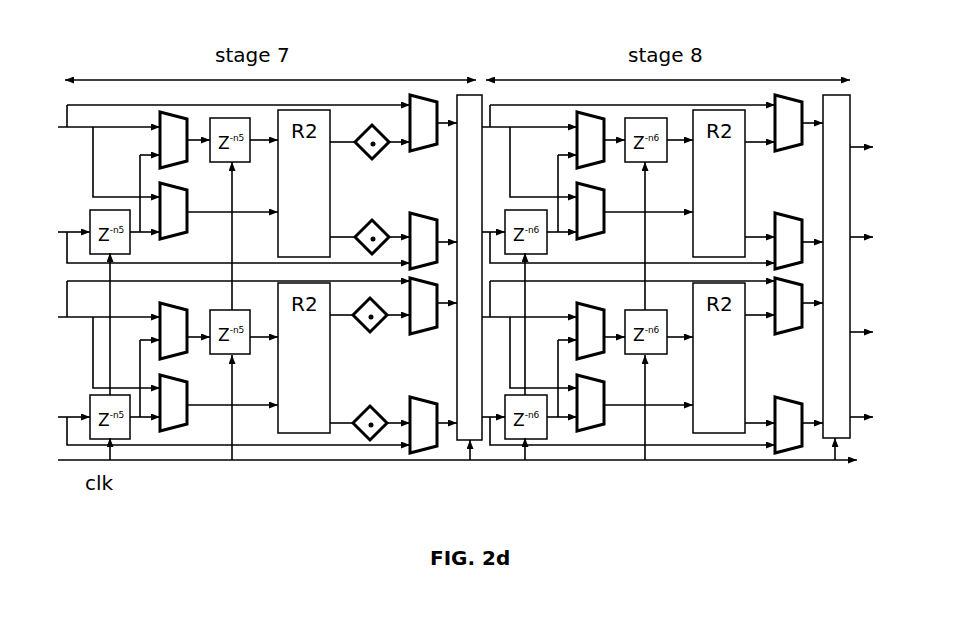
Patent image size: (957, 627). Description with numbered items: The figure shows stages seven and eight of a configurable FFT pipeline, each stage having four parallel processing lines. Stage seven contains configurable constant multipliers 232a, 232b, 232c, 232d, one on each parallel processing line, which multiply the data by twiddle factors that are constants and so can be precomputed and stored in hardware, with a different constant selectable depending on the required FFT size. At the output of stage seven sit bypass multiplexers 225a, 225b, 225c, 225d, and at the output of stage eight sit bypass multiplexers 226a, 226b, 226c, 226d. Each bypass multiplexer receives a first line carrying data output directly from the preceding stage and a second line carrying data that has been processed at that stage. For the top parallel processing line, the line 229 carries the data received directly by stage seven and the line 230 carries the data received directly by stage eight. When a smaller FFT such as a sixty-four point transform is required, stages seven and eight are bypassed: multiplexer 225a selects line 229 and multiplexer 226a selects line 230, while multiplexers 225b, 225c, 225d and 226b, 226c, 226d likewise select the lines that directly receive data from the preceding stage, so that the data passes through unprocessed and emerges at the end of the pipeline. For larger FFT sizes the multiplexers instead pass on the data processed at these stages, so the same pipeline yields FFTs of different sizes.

The line 229 is at (122, 104).
The line 230 is at (558, 104).
The configurable constant multiplier 232a is at (370, 124).
The configurable constant multiplier 232b is at (371, 219).
The configurable constant multiplier 232c is at (370, 333).
The configurable constant multiplier 232d is at (368, 441).
The bypass multiplexer 225a is at (426, 94).
The bypass multiplexer 225b is at (426, 212).
The bypass multiplexer 225c is at (426, 332).
The bypass multiplexer 225d is at (416, 452).
The bypass multiplexer 226a is at (786, 94).
The bypass multiplexer 226b is at (786, 212).
The bypass multiplexer 226c is at (790, 332).
The bypass multiplexer 226d is at (779, 452).